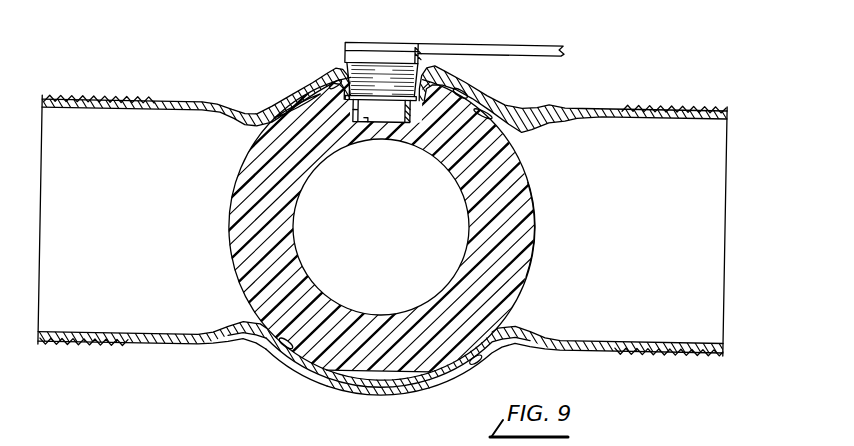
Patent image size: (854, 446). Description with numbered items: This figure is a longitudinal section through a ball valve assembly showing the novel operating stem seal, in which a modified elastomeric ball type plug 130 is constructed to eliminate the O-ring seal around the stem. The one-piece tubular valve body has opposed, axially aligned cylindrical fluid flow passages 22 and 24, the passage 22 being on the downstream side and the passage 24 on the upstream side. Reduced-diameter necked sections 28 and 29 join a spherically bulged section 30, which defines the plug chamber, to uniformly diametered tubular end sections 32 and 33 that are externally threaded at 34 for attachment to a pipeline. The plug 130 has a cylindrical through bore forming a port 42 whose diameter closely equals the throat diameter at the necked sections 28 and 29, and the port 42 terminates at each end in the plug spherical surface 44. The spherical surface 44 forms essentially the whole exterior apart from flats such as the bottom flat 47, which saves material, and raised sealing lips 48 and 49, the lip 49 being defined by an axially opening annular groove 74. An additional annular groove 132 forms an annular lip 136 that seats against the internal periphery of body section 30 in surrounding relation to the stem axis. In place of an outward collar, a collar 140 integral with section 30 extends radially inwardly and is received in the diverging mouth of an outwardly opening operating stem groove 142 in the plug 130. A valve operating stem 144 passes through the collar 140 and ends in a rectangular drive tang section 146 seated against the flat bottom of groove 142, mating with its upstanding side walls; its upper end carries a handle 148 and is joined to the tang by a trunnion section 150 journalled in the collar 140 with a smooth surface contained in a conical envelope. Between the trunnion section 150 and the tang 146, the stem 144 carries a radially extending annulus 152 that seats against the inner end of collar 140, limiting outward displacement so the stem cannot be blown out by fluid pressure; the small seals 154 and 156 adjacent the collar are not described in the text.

The fluid flow passage 22 is at (597, 336).
The fluid flow passage 24 is at (155, 336).
The necked section 28 is at (524, 345).
The necked section 29 is at (240, 342).
The spherically bulged section 30 is at (411, 396).
The tubular end section 32 is at (585, 344).
The tubular end section 33 is at (157, 349).
The external threads 34 is at (82, 349).
The port 42 is at (468, 253).
The plug spherical surface 44 is at (535, 262).
The bottom flat 47 is at (335, 387).
The sealing lip 48 is at (479, 361).
The sealing lip 49 is at (290, 374).
The annular groove 74 is at (282, 355).
The ball type plug 130 is at (535, 180).
The annular groove 132 is at (310, 99).
The annular lip 136 is at (329, 84).
The collar 140 is at (341, 66).
The operating stem groove 142 is at (367, 122).
The valve operating stem 144 is at (425, 59).
The drive tang section 146 is at (386, 122).
The handle 148 is at (519, 48).
The trunnion section 150 is at (360, 72).
The radially extending annulus 152 is at (402, 122).
The right upper seat 154 is at (468, 111).
The right upper seal 156 is at (455, 91).